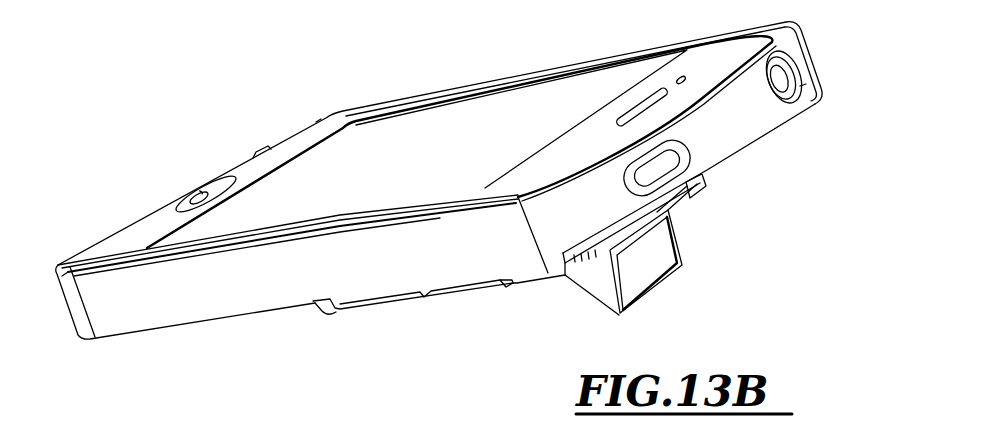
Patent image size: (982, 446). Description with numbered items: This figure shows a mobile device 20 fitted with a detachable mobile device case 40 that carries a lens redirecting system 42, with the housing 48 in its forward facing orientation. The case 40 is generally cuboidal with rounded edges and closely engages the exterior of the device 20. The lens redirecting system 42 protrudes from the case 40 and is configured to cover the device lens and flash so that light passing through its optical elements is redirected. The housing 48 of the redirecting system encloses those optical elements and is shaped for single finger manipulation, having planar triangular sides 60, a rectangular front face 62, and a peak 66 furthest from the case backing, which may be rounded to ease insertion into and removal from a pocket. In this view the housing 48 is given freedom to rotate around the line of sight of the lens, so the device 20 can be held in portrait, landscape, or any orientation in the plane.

The mobile device 20 is at (723, 52).
The detachable mobile device case 40 is at (807, 52).
The lens redirecting system 42 is at (765, 201).
The housing 48 is at (702, 228).
The planar triangular sides 60 is at (597, 283).
The rectangular front face 62 is at (643, 252).
The peak of the housing 66 is at (623, 311).